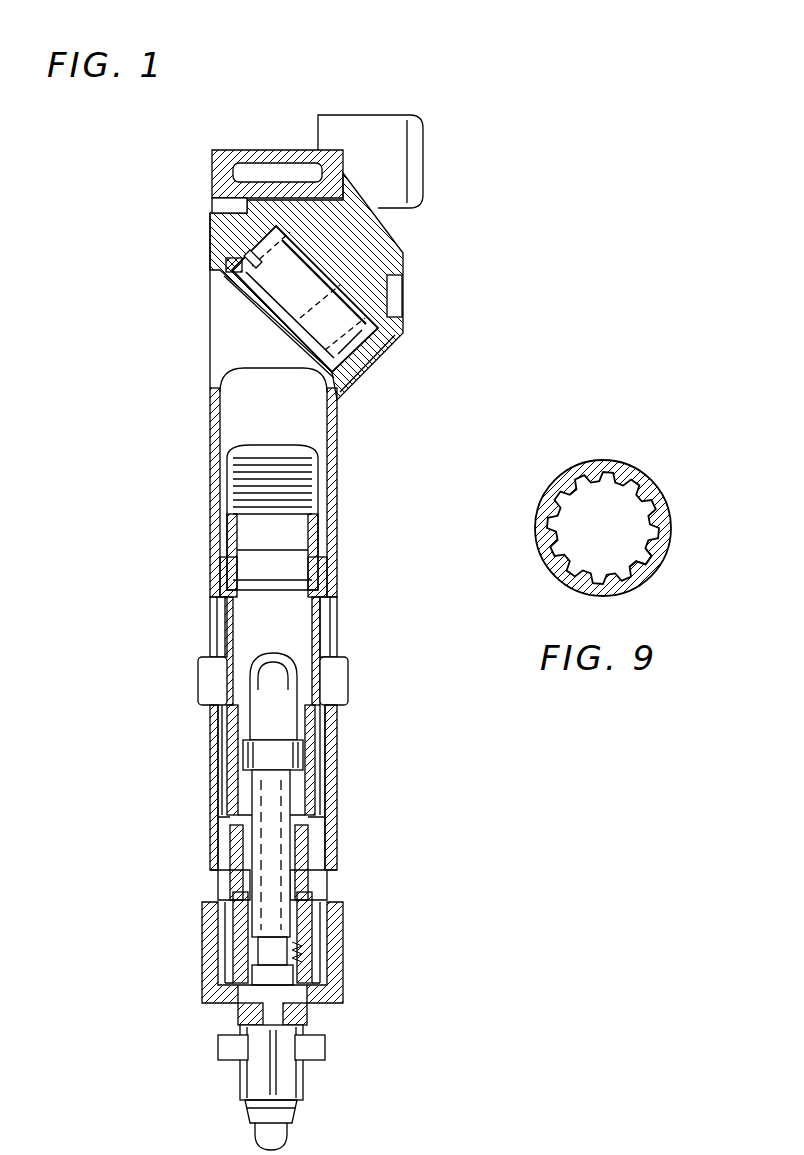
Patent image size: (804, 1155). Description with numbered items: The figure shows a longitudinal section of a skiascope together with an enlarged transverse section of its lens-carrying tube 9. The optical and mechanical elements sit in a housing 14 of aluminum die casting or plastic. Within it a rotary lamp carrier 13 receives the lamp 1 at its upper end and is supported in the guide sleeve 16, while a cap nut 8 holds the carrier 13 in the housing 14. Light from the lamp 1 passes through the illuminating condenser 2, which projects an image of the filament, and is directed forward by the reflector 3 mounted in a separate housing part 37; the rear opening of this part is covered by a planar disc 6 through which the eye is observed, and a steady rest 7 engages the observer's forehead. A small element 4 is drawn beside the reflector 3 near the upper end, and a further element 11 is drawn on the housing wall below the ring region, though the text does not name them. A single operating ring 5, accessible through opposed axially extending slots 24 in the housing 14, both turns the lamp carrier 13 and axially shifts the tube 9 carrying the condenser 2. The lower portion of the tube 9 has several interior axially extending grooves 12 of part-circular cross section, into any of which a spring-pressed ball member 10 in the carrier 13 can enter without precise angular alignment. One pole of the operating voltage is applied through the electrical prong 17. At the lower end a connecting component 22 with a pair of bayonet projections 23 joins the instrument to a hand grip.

In FIG. 1, the lamp 1 is at (262, 715).
In FIG. 1, the illuminating condenser 2 is at (245, 452).
In FIG. 1, the reflector 3 is at (257, 265).
In FIG. 1, the retaining nut 4 is at (232, 270).
In FIG. 1, the operating ring 5 is at (205, 675).
In FIG. 1, the planar disc 6 is at (390, 282).
In FIG. 1, the steady rest 7 is at (318, 118).
In FIG. 1, the cap nut 8 is at (345, 945).
In FIG. 1, the tube 9 is at (320, 675).
In FIG. 9, the tube 9 is at (580, 465).
In FIG. 1, the ball member 10 is at (302, 750).
In FIG. 1, the housing section 11 is at (338, 840).
In FIG. 9, the interior axially extending grooves 12 is at (648, 575).
In FIG. 1, the lamp carrier 13 is at (272, 795).
In FIG. 1, the housing 14 is at (215, 512).
In FIG. 1, the guide sleeve 16 is at (240, 915).
In FIG. 1, the electrical prong 17 is at (285, 1147).
In FIG. 1, the connecting component 22 is at (265, 1042).
In FIG. 1, the bayonet projections 23 is at (220, 1050).
In FIG. 1, the axially extending slots 24 is at (212, 625).
In FIG. 1, the housing part 37 is at (378, 237).